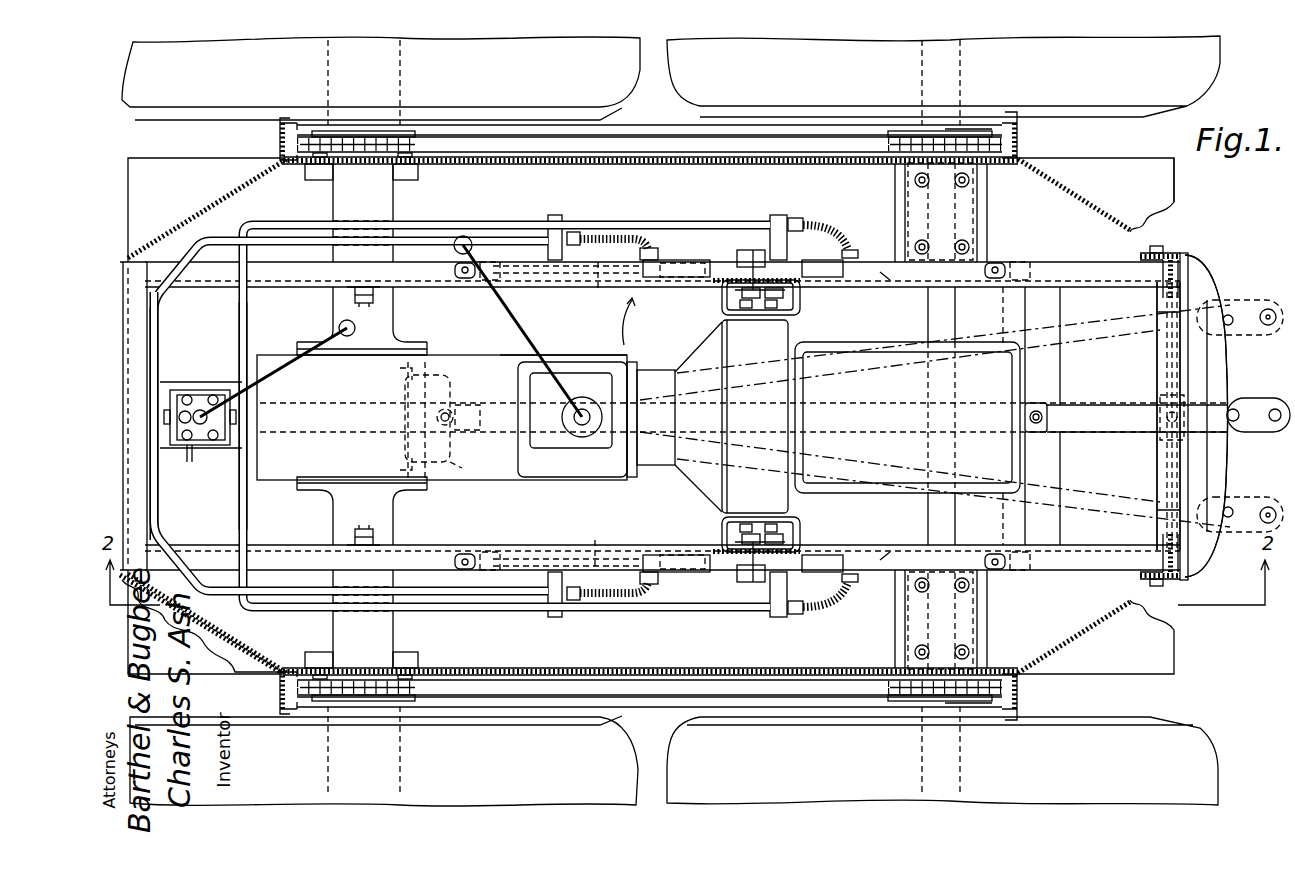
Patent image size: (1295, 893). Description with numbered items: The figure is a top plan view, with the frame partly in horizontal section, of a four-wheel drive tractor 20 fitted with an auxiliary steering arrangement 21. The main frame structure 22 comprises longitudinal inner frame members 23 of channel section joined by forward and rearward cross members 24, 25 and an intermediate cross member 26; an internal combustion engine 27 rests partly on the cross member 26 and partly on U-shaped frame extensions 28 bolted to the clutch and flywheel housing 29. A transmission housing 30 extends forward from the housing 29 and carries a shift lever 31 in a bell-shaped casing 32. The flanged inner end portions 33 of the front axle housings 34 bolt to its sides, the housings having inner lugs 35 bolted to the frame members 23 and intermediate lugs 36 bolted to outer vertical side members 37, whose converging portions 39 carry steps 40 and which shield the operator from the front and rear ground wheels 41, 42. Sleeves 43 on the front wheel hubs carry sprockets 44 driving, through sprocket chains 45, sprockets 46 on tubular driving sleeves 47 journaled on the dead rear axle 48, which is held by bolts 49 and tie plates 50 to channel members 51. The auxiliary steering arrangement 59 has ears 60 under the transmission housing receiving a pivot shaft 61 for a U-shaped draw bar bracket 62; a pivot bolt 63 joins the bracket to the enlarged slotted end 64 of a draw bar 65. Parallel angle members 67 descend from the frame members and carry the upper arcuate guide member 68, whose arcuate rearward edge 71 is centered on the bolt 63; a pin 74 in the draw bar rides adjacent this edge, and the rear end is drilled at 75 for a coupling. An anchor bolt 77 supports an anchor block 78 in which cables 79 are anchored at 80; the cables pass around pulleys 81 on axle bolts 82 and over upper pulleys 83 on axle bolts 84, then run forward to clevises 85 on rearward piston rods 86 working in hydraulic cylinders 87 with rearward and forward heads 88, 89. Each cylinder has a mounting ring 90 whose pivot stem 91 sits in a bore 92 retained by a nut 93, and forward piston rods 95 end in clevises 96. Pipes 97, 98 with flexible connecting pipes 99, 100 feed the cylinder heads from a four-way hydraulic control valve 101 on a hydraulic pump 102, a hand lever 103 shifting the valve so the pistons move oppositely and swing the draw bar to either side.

The tractor 20 is at (1192, 210).
The auxiliary steering arrangement 21 is at (1227, 275).
The main frame structure 22 is at (641, 321).
The longitudinal inner frame members 23 is at (1042, 258).
The forward cross member 24 is at (123, 336).
The rearward cross member 25 is at (1158, 366).
The intermediate cross member 26 is at (1050, 376).
The internal combustion engine 27 is at (868, 356).
The frame extensions 28 is at (800, 300).
The clutch and flywheel housing 29 is at (735, 333).
The transmission housing 30 is at (582, 355).
The shift lever 31 is at (518, 332).
The bell-shaped casing 32 is at (605, 372).
The flanged inner end portions 33 is at (427, 347).
The front axle housings 34 is at (393, 207).
The inner lugs 35 is at (347, 292).
The intermediate lugs 36 is at (418, 172).
The side members 37 is at (666, 166).
The converging portions 39 is at (205, 210).
The steps 40 is at (128, 200).
The front ground wheels 41 is at (616, 92).
The rear ground wheels 42 is at (1208, 76).
The sleeves 43 is at (415, 130).
The sprockets 44 is at (366, 131).
The sprocket chains 45 is at (652, 136).
The sprockets 46 is at (905, 131).
The tubular driving sleeves 47 is at (962, 129).
The rear axle 48 is at (946, 306).
The bolts 49 is at (915, 180).
The tie plates 50 is at (975, 222).
The channel members 51 is at (905, 210).
The auxiliary steering arrangement 59 is at (1244, 384).
The ears 60 is at (392, 370).
The pivot shaft 61 is at (405, 418).
The draw bar bracket 62 is at (462, 464).
The pivot bolt 63 is at (455, 408).
The enlarged slotted end 64 is at (478, 428).
The draw bar 65 is at (1098, 432).
The angle members 67 is at (1190, 258).
The upper arcuate guide member 68 is at (1220, 472).
The arcuate rearward edge 71 is at (1226, 362).
The pin 74 is at (1240, 408).
The drilled hole 75 is at (1275, 421).
The anchor bolt 77 is at (1166, 418).
The anchor block 78 is at (1160, 410).
The cables 79 is at (1157, 312).
The cable anchorage 80 is at (1168, 398).
The pulleys 81 is at (1157, 299).
The axle bolts 82 is at (1190, 283).
The pulleys 83 is at (1148, 255).
The axle bolts 84 is at (1156, 246).
The clevises 85 is at (1012, 416).
The rearward piston rods 86 is at (890, 282).
The hydraulic cylinders 87 is at (700, 260).
The rearward heads 88 is at (845, 252).
The forward heads 89 is at (656, 251).
The mounting ring 90 is at (744, 254).
The pivot stems 91 is at (755, 404).
The bores 92 is at (764, 284).
The retaining nuts 93 is at (735, 298).
The forward piston rods 95 is at (589, 416).
The clevises 96 is at (456, 268).
The pipe 97 is at (703, 221).
The pipe 98 is at (503, 247).
The flexible connecting pipe 99 is at (828, 220).
The flexible connecting pipe 100 is at (608, 235).
The four-way hydraulic control valve 101 is at (196, 390).
The hydraulic pump 102 is at (200, 450).
The hand lever 103 is at (274, 372).